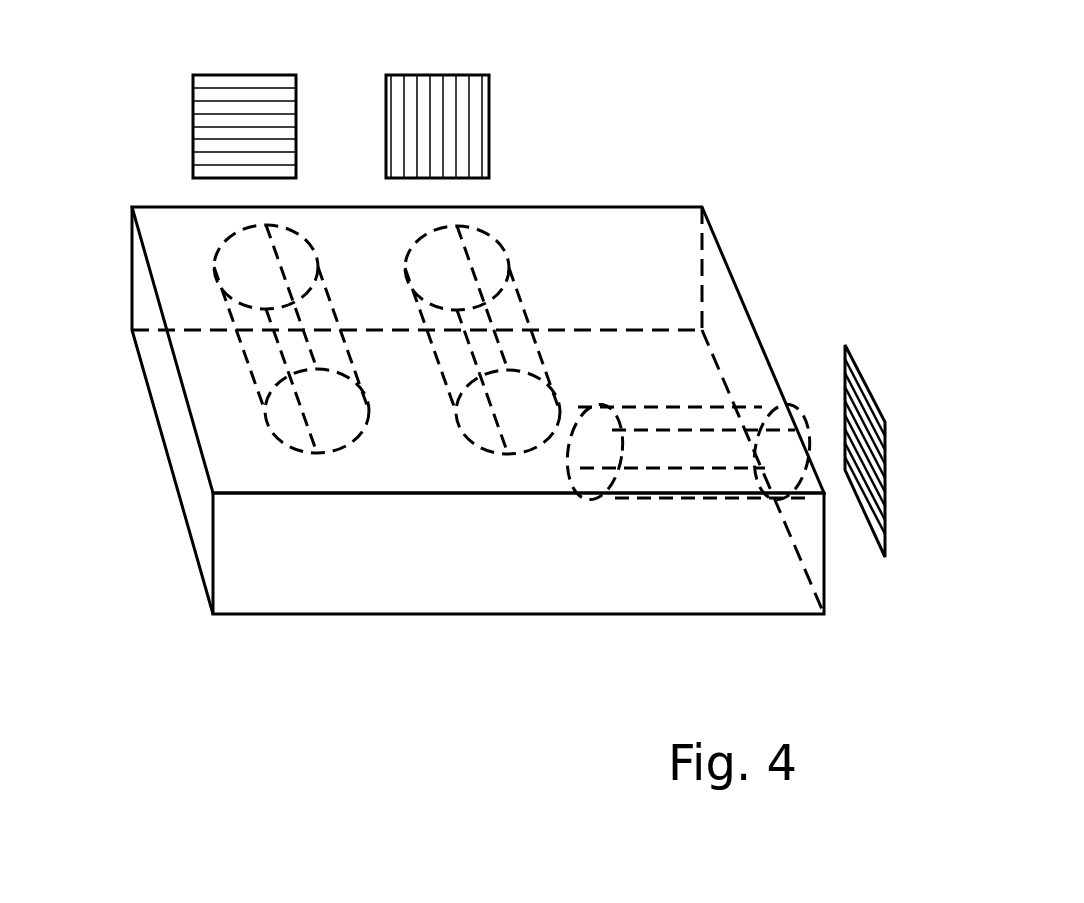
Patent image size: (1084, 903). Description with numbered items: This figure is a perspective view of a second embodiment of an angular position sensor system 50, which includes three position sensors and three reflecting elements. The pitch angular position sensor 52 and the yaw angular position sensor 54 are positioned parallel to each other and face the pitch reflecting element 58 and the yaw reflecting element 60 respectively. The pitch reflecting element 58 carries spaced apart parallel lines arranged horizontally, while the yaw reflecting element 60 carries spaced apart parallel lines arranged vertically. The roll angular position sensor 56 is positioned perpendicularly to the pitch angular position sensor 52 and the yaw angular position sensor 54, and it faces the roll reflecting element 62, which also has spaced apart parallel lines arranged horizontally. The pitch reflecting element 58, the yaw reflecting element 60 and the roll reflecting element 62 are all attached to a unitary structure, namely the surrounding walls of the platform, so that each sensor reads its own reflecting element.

The angular position sensor system 50 is at (460, 669).
The pitch angular position sensor 52 is at (214, 271).
The yaw angular position sensor 54 is at (509, 268).
The roll angular position sensor 56 is at (712, 407).
The pitch reflecting element 58 is at (257, 73).
The yaw reflecting element 60 is at (448, 73).
The roll reflecting element 62 is at (870, 396).